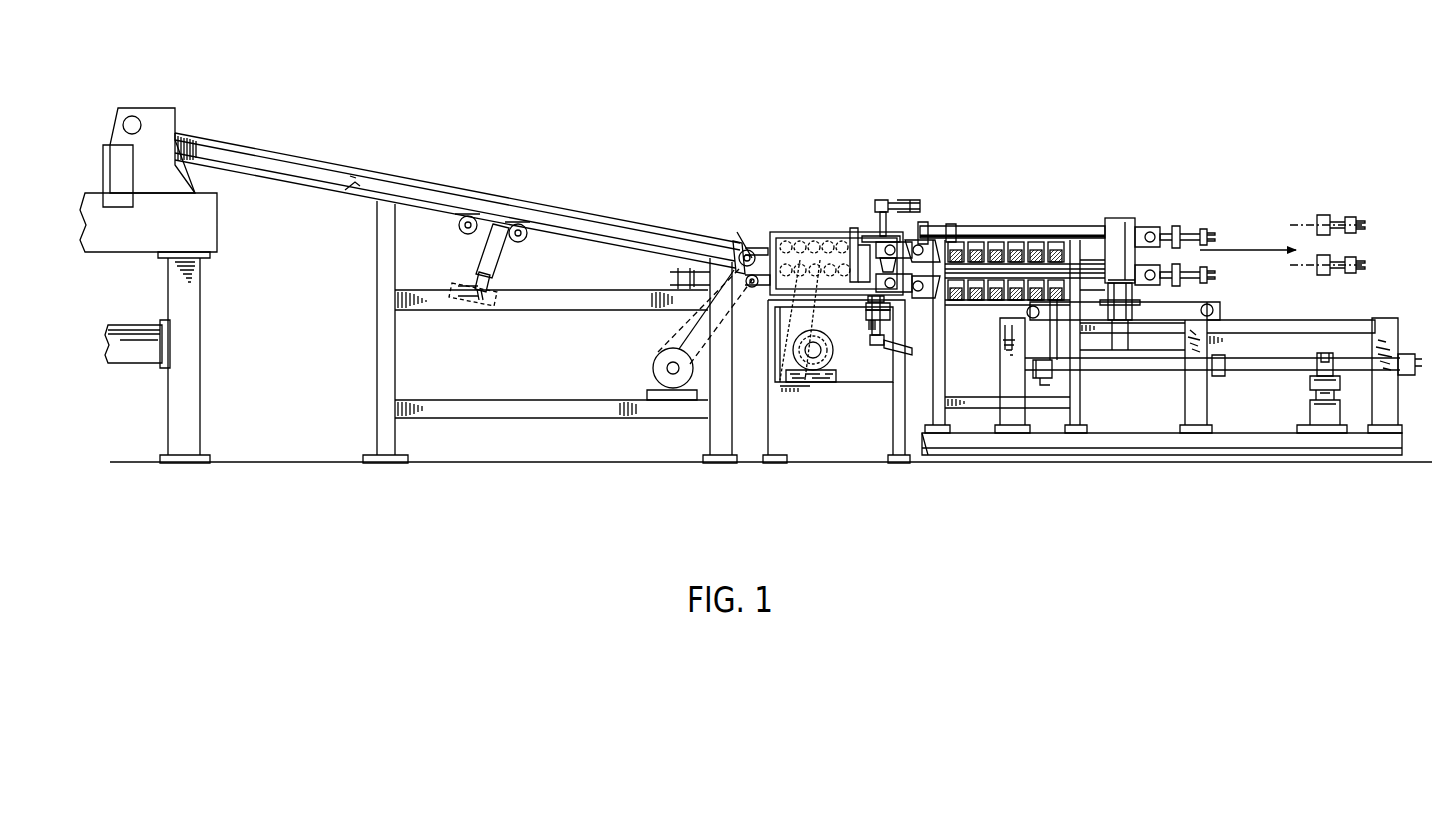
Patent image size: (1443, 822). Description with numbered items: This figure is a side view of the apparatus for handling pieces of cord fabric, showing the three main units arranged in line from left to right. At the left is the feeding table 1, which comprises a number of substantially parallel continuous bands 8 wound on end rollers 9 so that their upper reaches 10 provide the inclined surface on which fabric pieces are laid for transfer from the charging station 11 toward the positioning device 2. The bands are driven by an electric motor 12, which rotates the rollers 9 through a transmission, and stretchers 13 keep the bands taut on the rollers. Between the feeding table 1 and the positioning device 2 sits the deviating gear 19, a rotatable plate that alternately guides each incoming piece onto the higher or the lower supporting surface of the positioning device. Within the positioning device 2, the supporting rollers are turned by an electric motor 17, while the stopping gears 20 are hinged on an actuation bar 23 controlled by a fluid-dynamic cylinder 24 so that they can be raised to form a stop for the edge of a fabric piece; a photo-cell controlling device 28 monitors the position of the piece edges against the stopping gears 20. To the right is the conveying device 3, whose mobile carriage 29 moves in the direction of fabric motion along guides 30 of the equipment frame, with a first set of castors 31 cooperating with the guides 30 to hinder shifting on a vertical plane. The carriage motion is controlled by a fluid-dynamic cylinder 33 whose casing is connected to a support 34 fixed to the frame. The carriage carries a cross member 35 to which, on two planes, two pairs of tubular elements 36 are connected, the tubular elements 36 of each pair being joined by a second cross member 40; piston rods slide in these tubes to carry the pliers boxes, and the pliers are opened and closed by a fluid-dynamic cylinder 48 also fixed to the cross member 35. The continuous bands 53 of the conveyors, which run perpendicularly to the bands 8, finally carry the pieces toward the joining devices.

The feeding table 1 is at (516, 188).
The positioning device 2 is at (812, 226).
The conveying device 3 is at (1045, 220).
The continuous bands 8 is at (291, 158).
The end rollers 9 is at (135, 106).
The upper reaches 10 is at (184, 122).
The charging station 11 is at (106, 110).
The electric motor 12 is at (650, 372).
The stretchers 13 is at (502, 250).
The electric motor 17 is at (828, 366).
The deviating gear 19 is at (753, 242).
The stopping gears 20 is at (923, 238).
The actuation bar 23 is at (855, 246).
The fluid-dynamic cylinder 24 is at (870, 322).
The photo-cell controlling device 28 is at (906, 198).
The carriage 29 is at (1126, 346).
The guides 30 is at (1346, 320).
The first set of castors 31 is at (1213, 310).
The fluid-dynamic cylinder 33 is at (1263, 372).
The support 34 is at (1326, 412).
The cross member 35 is at (1128, 232).
The tubular elements 36 is at (988, 226).
The second cross member 40 is at (953, 228).
The fluid-dynamic cylinder 48 is at (1184, 272).
The continuous bands 53 is at (1078, 246).